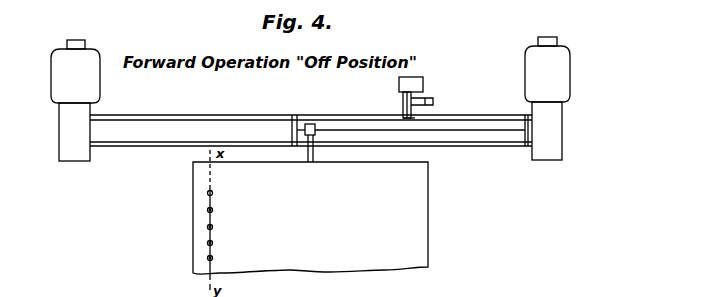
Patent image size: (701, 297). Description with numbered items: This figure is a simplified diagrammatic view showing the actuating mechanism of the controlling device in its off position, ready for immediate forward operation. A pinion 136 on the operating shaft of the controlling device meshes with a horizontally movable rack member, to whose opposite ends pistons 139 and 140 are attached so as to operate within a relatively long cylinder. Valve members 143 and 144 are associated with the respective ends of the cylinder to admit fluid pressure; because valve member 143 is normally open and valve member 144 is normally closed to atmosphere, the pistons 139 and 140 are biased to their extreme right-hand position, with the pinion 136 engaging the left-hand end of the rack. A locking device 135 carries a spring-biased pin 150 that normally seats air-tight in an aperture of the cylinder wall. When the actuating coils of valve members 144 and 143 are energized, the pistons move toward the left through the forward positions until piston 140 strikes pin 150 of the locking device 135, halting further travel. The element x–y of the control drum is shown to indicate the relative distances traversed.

The locking device 135 is at (401, 97).
The pinion 136 is at (311, 124).
The piston 139 is at (292, 130).
The piston 140 is at (526, 117).
The valve member 143 is at (63, 100).
The valve member 144 is at (564, 98).
The pin 150 is at (412, 118).